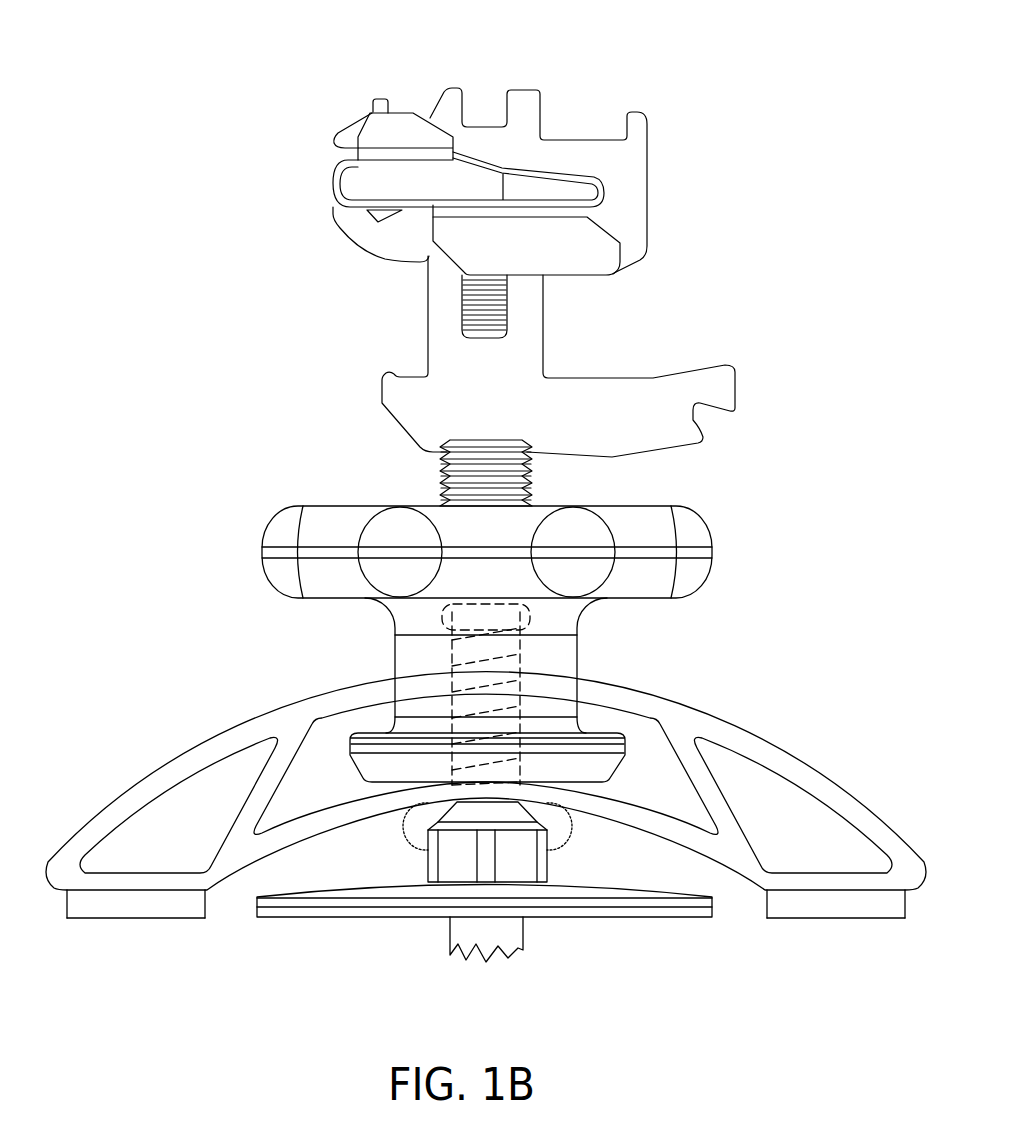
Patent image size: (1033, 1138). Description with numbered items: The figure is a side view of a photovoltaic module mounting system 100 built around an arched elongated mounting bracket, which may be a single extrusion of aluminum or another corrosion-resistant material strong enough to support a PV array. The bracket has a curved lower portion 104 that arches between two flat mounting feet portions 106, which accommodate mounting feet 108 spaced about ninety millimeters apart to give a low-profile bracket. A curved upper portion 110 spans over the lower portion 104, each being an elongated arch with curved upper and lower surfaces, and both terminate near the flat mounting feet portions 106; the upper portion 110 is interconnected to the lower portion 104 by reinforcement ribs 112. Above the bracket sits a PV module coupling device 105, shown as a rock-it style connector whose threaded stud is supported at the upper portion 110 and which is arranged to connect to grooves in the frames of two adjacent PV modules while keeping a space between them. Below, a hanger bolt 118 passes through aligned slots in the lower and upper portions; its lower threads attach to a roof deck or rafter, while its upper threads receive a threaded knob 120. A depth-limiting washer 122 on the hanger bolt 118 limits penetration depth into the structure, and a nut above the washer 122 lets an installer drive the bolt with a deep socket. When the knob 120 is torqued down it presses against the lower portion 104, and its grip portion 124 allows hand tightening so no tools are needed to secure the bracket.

The photovoltaic module mounting system 100 is at (222, 35).
The lower portion 104 is at (643, 817).
The PV module coupling device 105 is at (692, 175).
The flat mounting feet portions 106 is at (142, 891).
The mounting feet 108 is at (123, 919).
The upper portion 110 is at (486, 822).
The reinforcement ribs 112 is at (253, 800).
The hanger bolt 118 is at (518, 951).
The threaded knob 120 is at (556, 635).
The washer 122 is at (358, 923).
The grip portion 124 is at (689, 525).